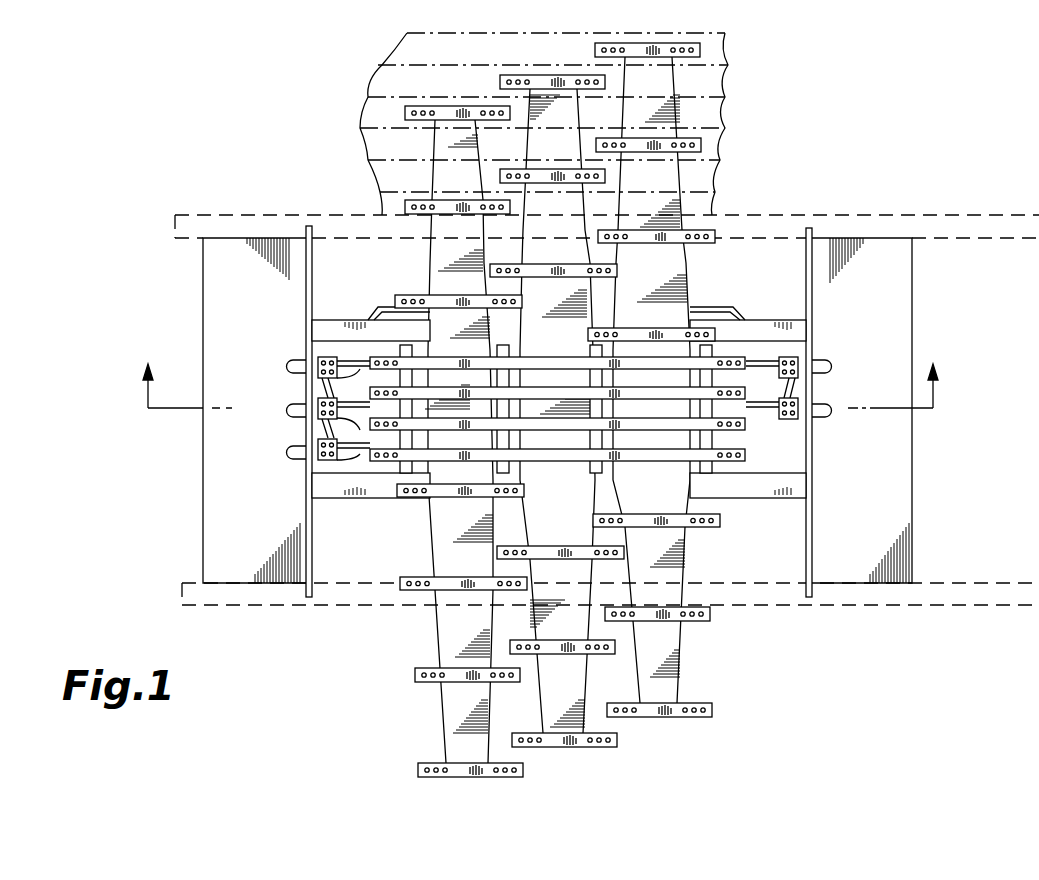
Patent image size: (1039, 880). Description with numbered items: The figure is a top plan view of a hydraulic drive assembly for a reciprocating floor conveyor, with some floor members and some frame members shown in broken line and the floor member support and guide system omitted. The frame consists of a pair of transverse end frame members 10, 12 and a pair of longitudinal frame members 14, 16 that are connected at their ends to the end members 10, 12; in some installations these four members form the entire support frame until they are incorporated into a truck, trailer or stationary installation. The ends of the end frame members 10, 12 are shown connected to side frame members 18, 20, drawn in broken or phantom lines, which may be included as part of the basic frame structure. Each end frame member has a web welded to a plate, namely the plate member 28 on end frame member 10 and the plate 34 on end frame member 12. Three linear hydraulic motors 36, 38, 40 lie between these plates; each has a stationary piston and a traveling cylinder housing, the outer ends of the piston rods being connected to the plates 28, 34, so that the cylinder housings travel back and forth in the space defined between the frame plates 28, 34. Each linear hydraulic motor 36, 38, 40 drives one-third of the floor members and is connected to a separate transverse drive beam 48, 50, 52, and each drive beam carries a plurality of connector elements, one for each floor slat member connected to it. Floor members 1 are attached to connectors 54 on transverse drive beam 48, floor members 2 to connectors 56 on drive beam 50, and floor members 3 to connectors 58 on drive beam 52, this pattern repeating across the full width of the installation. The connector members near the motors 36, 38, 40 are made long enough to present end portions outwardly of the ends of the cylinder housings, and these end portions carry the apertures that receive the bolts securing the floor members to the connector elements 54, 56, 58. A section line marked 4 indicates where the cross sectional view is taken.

The floor members 1 is at (400, 36).
The floor members 2 is at (375, 68).
The floor members 3 is at (366, 99).
The section line 4- 4 is at (537, 386).
The transverse end frame member 10 is at (203, 479).
The transverse end frame member 12 is at (912, 548).
The longitudinal frame member 14 is at (335, 325).
The longitudinal frame member 16 is at (360, 485).
The side frame member 18 is at (760, 220).
The side frame member 20 is at (755, 597).
The plate member 28 is at (312, 556).
The plate 34 is at (812, 538).
The linear hydraulic motor 36 is at (320, 386).
The linear hydraulic motor 38 is at (330, 420).
The linear hydraulic motor 40 is at (318, 472).
The transverse drive beam 48 is at (690, 278).
The transverse drive beam 50 is at (573, 508).
The transverse drive beam 52 is at (447, 530).
The connectors 54 is at (665, 42).
The connectors 56 is at (553, 75).
The connectors 58 is at (452, 110).